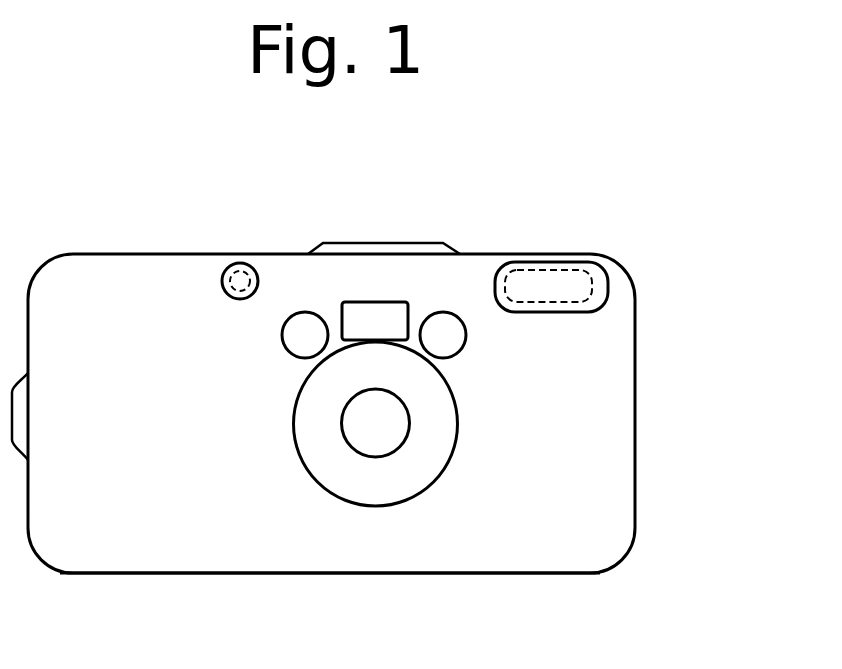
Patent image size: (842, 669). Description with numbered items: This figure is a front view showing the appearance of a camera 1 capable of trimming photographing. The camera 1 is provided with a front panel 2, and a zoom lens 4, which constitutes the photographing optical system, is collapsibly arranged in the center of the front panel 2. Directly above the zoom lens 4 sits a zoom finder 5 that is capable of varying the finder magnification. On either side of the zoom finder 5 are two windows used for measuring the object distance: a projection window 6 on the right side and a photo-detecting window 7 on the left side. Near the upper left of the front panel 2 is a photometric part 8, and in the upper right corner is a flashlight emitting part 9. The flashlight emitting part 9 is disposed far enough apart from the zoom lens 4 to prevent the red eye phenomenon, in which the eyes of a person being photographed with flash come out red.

The camera 1 is at (657, 402).
The front panel 2 is at (530, 500).
The zoom lens 4 is at (343, 443).
The zoom finder 5 is at (378, 302).
The projection window 6 is at (450, 313).
The photo-detecting window 7 is at (285, 317).
The photometric part 8 is at (225, 258).
The flashlight emitting part 9 is at (552, 262).